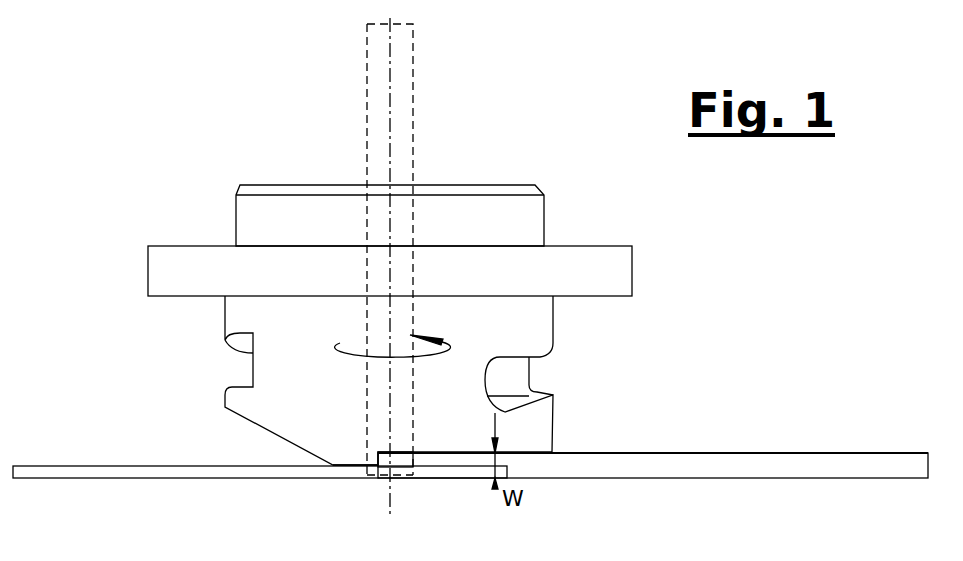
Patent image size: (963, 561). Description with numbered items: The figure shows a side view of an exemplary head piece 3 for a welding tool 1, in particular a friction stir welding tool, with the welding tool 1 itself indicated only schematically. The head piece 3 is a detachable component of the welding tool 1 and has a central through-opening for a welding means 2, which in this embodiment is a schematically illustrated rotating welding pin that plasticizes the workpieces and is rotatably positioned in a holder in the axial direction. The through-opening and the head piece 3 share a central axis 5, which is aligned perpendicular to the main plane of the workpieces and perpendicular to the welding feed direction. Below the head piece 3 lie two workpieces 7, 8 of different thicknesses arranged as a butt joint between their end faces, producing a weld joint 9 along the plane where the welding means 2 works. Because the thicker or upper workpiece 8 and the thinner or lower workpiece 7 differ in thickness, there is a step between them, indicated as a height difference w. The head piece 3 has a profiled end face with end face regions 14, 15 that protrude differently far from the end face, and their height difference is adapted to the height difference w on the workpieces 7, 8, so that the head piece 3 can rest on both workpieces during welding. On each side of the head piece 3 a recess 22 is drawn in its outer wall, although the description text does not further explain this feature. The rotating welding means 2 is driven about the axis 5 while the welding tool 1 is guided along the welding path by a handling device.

The welding tool 1 is at (288, 145).
The welding means 2 is at (404, 162).
The head piece 3 is at (600, 268).
The central axis 5 is at (390, 60).
The workpiece 7 is at (145, 470).
The workpiece 8 is at (725, 472).
The weld joint 9 is at (388, 480).
The end face region 14 is at (362, 465).
The end face region 15 is at (393, 452).
The recess / hook 22 is at (245, 358).